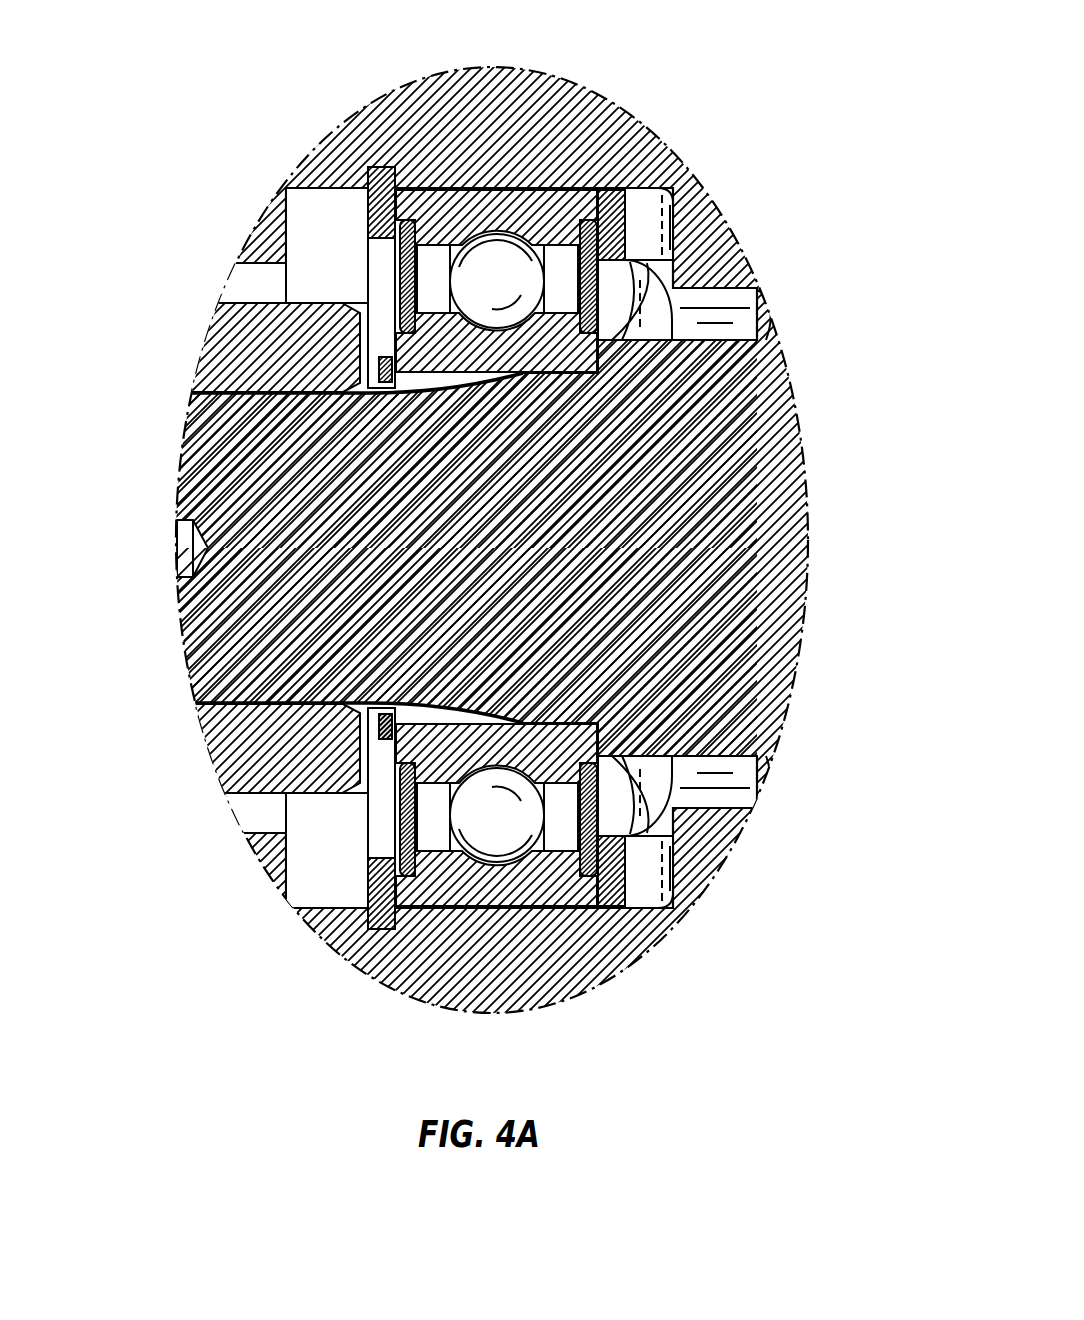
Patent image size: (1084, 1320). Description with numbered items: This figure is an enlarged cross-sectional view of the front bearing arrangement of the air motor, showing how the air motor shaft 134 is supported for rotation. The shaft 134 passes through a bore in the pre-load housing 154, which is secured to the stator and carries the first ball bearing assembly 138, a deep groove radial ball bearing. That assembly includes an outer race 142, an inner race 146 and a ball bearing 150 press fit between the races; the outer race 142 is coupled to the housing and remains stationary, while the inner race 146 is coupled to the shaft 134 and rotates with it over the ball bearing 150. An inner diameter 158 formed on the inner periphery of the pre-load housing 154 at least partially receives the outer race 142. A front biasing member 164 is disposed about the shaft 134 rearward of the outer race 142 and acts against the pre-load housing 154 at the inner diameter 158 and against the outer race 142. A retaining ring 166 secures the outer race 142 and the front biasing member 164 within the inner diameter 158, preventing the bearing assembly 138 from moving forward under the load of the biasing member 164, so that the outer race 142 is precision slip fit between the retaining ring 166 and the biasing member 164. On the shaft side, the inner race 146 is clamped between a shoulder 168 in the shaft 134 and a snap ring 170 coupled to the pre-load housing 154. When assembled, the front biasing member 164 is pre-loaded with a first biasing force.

The air motor shaft 134 is at (238, 489).
The first ball bearing assembly 138 is at (627, 143).
The outer race 142 is at (418, 207).
The inner race 146 is at (383, 728).
The ball bearing 150 is at (416, 272).
The pre-load housing 154 is at (593, 129).
The inner diameter 158 is at (462, 195).
The front biasing member 164 is at (647, 295).
The retaining ring 166 is at (378, 173).
The shoulder 168 is at (603, 354).
The snap ring 170 is at (378, 364).